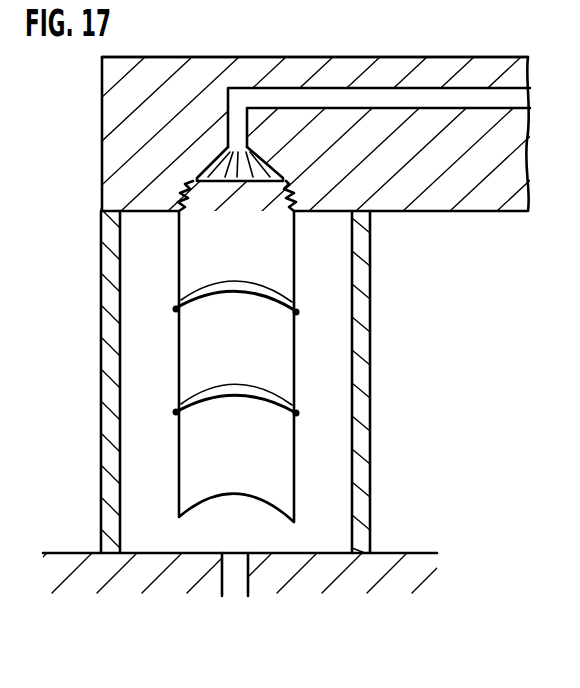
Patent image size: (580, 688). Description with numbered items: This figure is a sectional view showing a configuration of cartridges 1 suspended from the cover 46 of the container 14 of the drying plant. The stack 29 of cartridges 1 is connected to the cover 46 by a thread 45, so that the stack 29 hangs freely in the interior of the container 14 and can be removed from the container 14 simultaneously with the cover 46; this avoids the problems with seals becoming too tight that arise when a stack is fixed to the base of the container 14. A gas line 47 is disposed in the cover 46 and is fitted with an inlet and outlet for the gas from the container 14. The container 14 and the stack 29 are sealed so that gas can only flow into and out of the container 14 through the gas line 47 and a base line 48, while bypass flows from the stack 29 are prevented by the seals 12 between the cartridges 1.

The container 14 is at (66, 125).
The cover 46 is at (283, 61).
The gas line 47 is at (436, 98).
The thread 45 is at (290, 192).
The stack 29 is at (318, 281).
The seals 12 is at (299, 312).
The cartridges 1 is at (178, 261).
The base line 48 is at (237, 588).